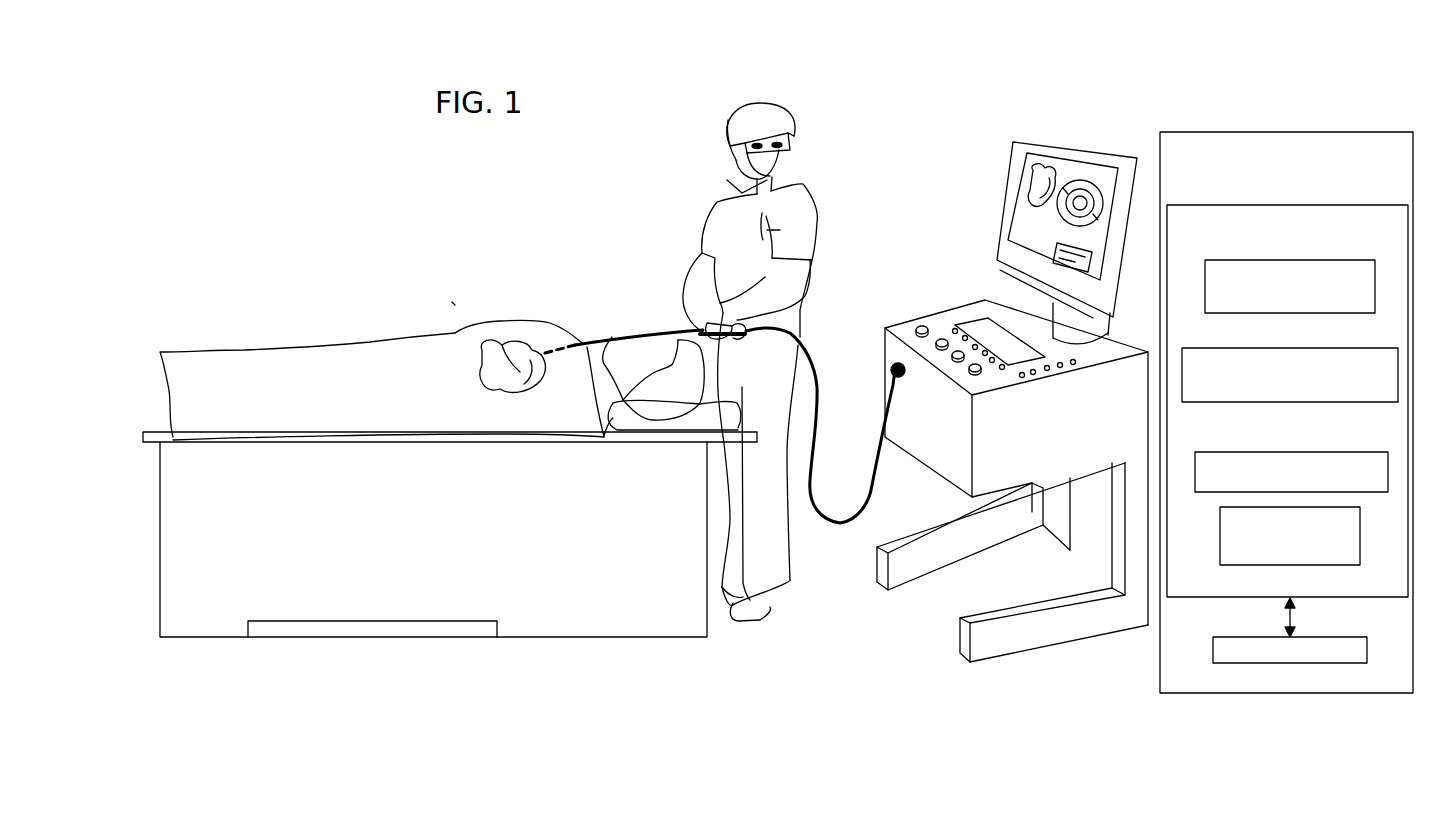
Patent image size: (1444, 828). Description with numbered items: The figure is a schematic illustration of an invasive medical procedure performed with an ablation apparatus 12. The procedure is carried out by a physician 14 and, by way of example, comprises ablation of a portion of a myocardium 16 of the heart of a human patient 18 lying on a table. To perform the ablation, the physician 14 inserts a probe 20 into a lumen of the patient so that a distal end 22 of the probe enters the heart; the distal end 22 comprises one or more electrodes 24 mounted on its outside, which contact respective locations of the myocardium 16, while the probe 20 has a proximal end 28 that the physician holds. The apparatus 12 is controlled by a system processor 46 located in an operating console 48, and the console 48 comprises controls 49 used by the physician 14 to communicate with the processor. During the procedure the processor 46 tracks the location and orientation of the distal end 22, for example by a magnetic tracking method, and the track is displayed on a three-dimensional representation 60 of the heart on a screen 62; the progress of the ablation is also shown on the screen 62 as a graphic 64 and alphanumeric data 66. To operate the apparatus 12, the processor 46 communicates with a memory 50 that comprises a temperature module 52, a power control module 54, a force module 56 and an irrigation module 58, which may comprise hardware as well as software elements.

The ablation apparatus 12 is at (1089, 340).
The physician 14 is at (763, 110).
The myocardium 16 is at (497, 340).
The human patient 18 is at (242, 372).
The probe 20 is at (601, 326).
The distal end 22 is at (530, 303).
The electrodes 24 is at (452, 303).
The proximal end 28 is at (890, 373).
The system processor 46 is at (1286, 433).
The operating console 48 is at (1089, 359).
The controls 49 is at (930, 326).
The memory 50 is at (1183, 598).
The temperature module 52 is at (1369, 260).
The power control module 54 is at (1285, 402).
The force module 56 is at (1384, 452).
The irrigation module 58 is at (1360, 517).
The three-dimensional representation 60 is at (1032, 163).
The screen 62 is at (1015, 201).
The graphic 64 is at (1083, 173).
The alphanumeric data 66 is at (1057, 243).